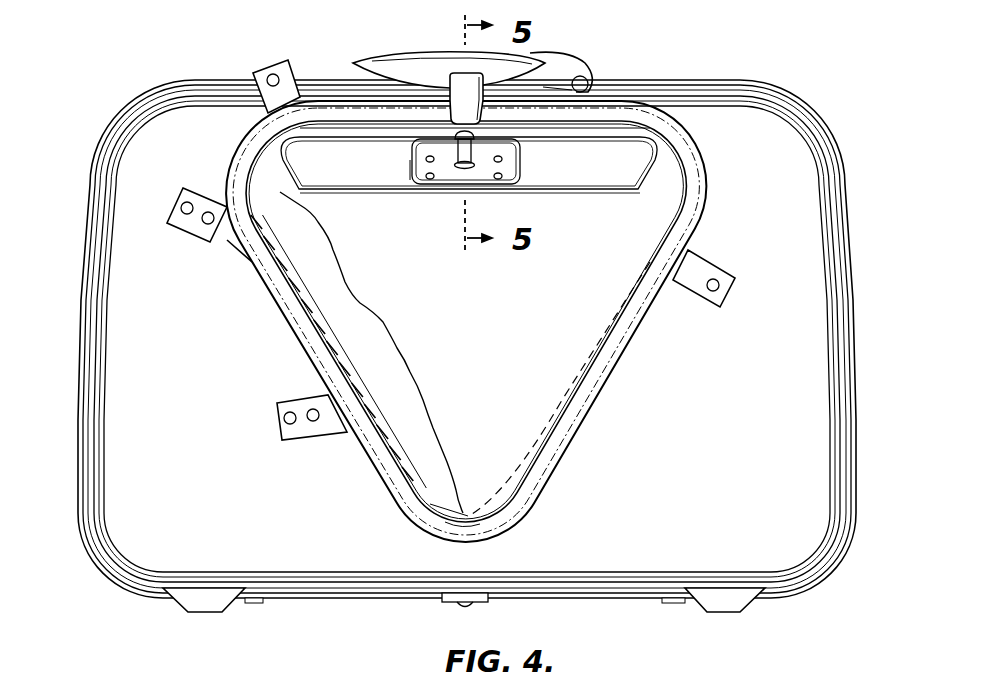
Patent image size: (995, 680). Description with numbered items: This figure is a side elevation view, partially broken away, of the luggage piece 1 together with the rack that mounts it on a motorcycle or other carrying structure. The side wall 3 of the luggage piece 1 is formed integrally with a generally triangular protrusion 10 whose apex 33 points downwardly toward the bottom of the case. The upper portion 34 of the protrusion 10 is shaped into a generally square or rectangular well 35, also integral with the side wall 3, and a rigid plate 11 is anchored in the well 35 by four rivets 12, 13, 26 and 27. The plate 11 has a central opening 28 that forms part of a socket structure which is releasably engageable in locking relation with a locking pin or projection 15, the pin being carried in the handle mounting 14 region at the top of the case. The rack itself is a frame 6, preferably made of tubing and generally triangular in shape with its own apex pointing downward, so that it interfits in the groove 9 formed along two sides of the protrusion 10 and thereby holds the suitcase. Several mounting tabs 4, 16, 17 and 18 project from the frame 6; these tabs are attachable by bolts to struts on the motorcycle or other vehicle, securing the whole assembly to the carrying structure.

The luggage piece 1 is at (102, 573).
The side wall 3 is at (330, 552).
The mounting tab 4 is at (228, 240).
The frame 6 is at (582, 425).
The groove 9 is at (414, 488).
The protrusion 10 is at (495, 388).
The plate 11 is at (447, 172).
The rivet 12 is at (430, 179).
The rivet 13 is at (502, 177).
The handle mount 14 is at (440, 88).
The locking pin 15 is at (465, 168).
The mounting tab 16 is at (285, 78).
The mounting tab 17 is at (720, 245).
The mounting tab 18 is at (307, 428).
The rivet 26 is at (425, 159).
The rivet 27 is at (502, 159).
The central opening 28 is at (470, 166).
The apex 33 is at (475, 524).
The upper portion 34 is at (590, 152).
The well 35 is at (412, 178).